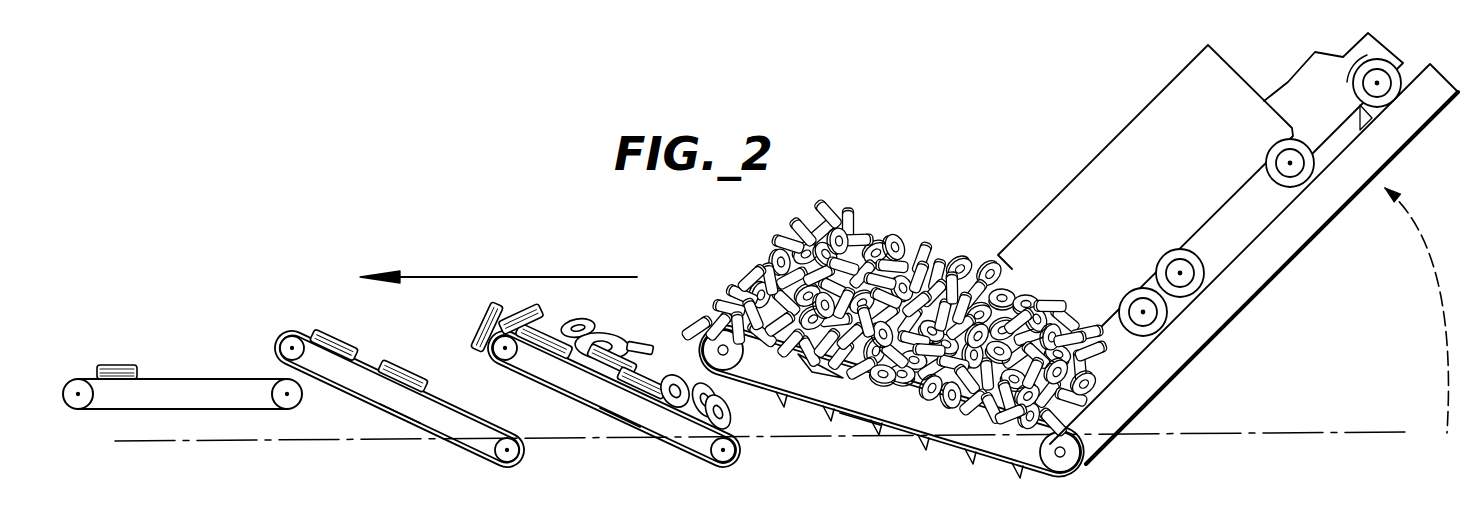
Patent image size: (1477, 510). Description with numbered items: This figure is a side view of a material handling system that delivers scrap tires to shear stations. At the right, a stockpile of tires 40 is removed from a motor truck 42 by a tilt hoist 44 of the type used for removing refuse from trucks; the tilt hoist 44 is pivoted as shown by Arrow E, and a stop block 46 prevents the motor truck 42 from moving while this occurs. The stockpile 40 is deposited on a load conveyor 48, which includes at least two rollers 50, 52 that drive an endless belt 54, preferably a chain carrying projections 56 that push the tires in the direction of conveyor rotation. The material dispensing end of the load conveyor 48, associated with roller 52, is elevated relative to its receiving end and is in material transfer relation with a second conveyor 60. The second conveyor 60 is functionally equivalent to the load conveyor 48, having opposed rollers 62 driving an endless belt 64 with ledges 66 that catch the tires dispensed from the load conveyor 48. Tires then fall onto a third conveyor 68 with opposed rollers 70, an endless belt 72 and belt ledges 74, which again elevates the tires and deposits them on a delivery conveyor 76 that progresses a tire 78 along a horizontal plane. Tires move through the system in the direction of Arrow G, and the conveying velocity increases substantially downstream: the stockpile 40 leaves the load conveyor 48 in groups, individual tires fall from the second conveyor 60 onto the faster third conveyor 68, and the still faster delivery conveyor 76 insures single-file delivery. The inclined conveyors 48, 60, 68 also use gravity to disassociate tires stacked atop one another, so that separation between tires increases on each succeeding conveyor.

The stockpile of tires 40 is at (955, 238).
The motor truck 42 is at (1082, 185).
The tilt hoist 44 is at (1322, 214).
The stop block 46 is at (1368, 127).
The load conveyor 48 is at (891, 417).
The roller 50 is at (1063, 462).
The roller 52 is at (735, 358).
The endless belt 54 is at (857, 421).
The projections 56 is at (836, 379).
The second conveyor 60 is at (616, 398).
The rollers 62 is at (501, 356).
The endless belt 64 is at (662, 438).
The ledges 66 is at (575, 411).
The third conveyor 68 is at (393, 391).
The rollers 70 is at (286, 341).
The endless belt 72 is at (452, 442).
The belt ledges 74 is at (292, 334).
The delivery conveyor 76 is at (222, 397).
The tire 78 is at (118, 364).
The Arrow G is at (550, 275).
The Arrow E is at (1446, 302).